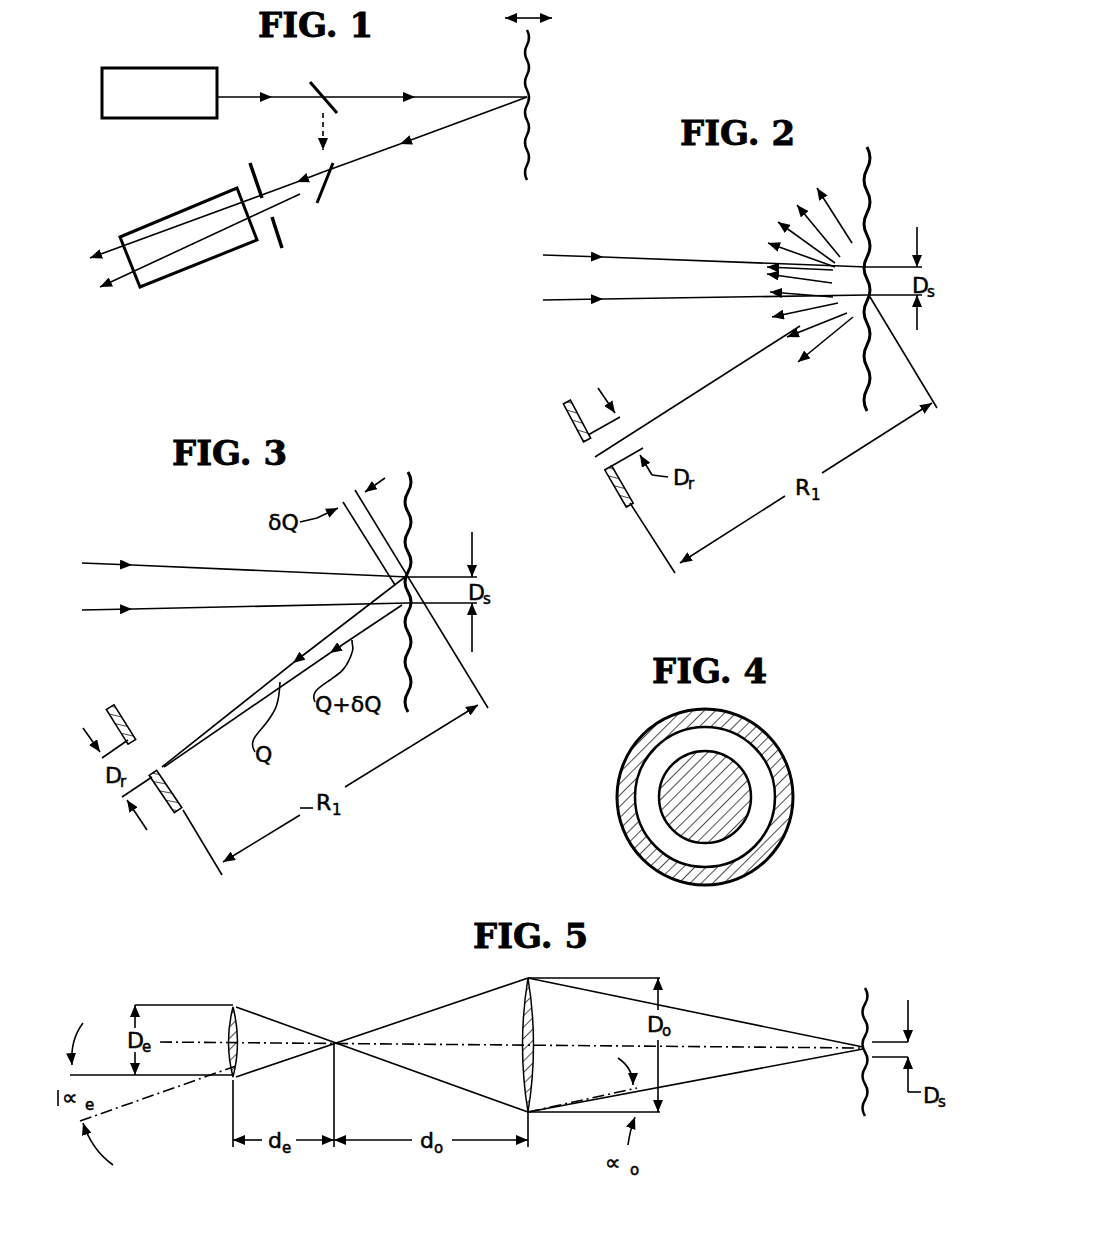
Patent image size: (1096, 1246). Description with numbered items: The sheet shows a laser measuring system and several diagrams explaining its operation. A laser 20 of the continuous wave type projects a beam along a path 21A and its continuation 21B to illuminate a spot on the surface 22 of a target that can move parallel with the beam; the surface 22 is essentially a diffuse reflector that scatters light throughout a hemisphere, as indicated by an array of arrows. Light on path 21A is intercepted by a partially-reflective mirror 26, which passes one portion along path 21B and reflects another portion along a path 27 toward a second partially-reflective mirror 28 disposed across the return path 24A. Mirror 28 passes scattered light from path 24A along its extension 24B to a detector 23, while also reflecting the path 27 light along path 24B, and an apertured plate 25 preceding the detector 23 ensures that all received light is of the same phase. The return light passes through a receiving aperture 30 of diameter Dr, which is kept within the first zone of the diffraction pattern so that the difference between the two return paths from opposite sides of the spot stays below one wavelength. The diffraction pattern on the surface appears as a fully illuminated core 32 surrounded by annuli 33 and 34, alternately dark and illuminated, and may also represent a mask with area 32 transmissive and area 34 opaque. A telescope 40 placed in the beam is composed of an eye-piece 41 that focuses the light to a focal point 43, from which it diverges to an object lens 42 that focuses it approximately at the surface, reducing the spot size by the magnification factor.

In FIG. 1, the laser 20 is at (167, 67).
In FIG. 1, the path 21A is at (283, 97).
In FIG. 1, the continuation path 21B is at (427, 97).
In FIG. 2, the continuation path 21B is at (626, 280).
In FIG. 3, the continuation path 21B is at (110, 583).
In FIG. 5, the continuation path 21B is at (697, 1045).
In FIG. 1, the surface 22 is at (527, 130).
In FIG. 2, the surface 22 is at (873, 207).
In FIG. 5, the surface 22 is at (862, 998).
In FIG. 1, the detector 23 is at (183, 213).
In FIG. 1, the path 24A is at (392, 156).
In FIG. 2, the path 24A is at (717, 383).
In FIG. 3, the path 24A is at (142, 762).
In FIG. 1, the extension path 24B is at (283, 203).
In FIG. 1, the apertured plate 25 is at (277, 243).
In FIG. 1, the partially-reflective mirror 26 is at (323, 82).
In FIG. 1, the path 27 is at (325, 120).
In FIG. 1, the partially-reflective mirror 28 is at (325, 192).
In FIG. 2, the receiving aperture 30 is at (590, 440).
In FIG. 3, the receiving aperture 30 is at (125, 740).
In FIG. 4, the illuminated core 32 is at (728, 813).
In FIG. 4, the annulus 33 is at (763, 785).
In FIG. 4, the first surrounding illuminated annulus 34 is at (752, 737).
In FIG. 5, the telescope 40 is at (410, 996).
In FIG. 5, the eye-piece 41 is at (243, 1015).
In FIG. 5, the object lens 42 is at (517, 1010).
In FIG. 5, the focal point 43 is at (332, 1035).